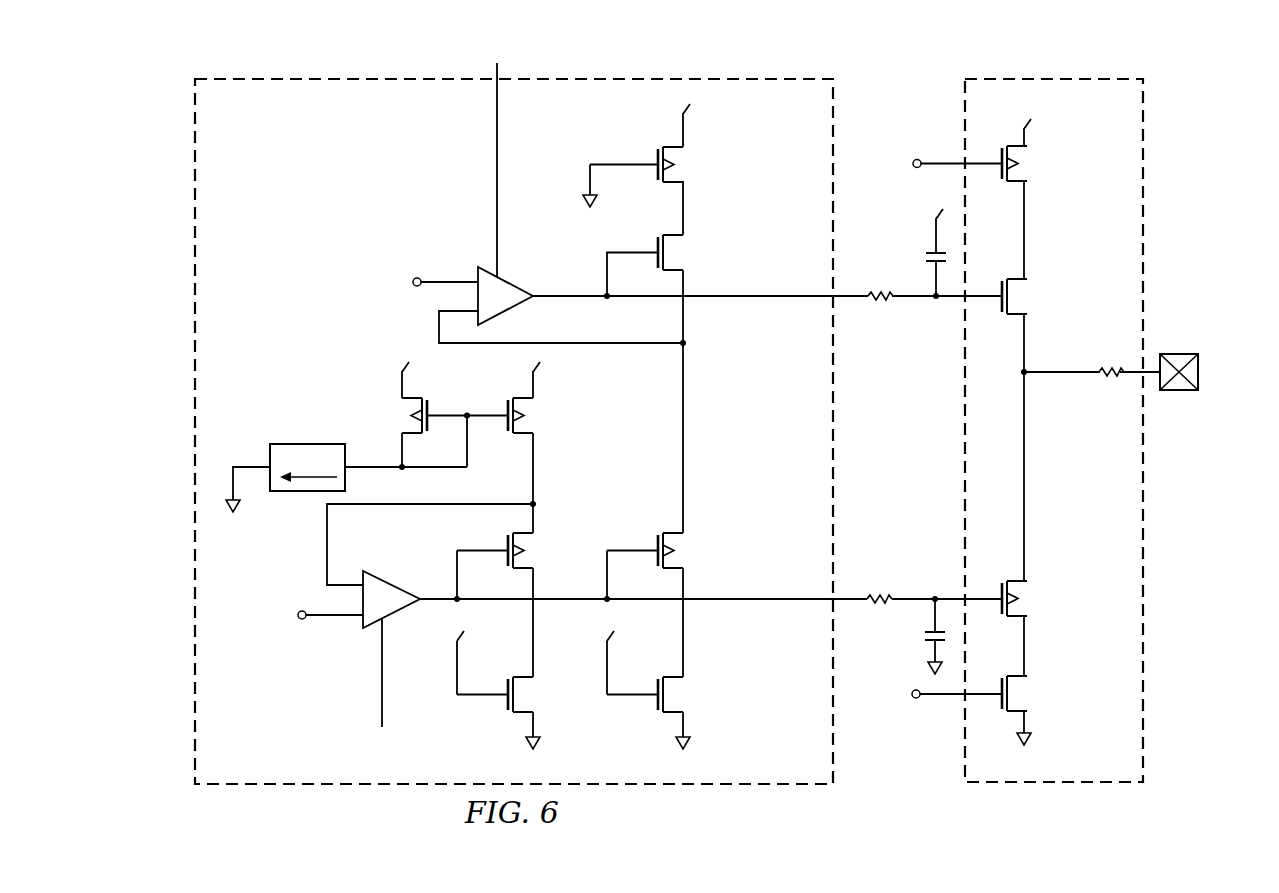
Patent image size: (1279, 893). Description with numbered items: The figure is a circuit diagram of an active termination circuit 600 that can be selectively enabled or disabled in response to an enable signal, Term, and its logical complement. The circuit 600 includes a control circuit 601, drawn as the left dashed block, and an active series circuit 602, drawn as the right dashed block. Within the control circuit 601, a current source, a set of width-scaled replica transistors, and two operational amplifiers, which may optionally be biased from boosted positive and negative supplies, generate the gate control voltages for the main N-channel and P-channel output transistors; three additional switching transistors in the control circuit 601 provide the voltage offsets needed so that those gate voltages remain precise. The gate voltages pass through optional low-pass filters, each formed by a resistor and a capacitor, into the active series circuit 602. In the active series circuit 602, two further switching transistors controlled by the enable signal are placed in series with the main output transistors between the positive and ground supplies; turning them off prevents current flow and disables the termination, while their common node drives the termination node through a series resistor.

The active termination circuit 600 is at (1197, 117).
The control circuit 601 is at (194, 480).
The active series circuit 602 is at (1143, 477).